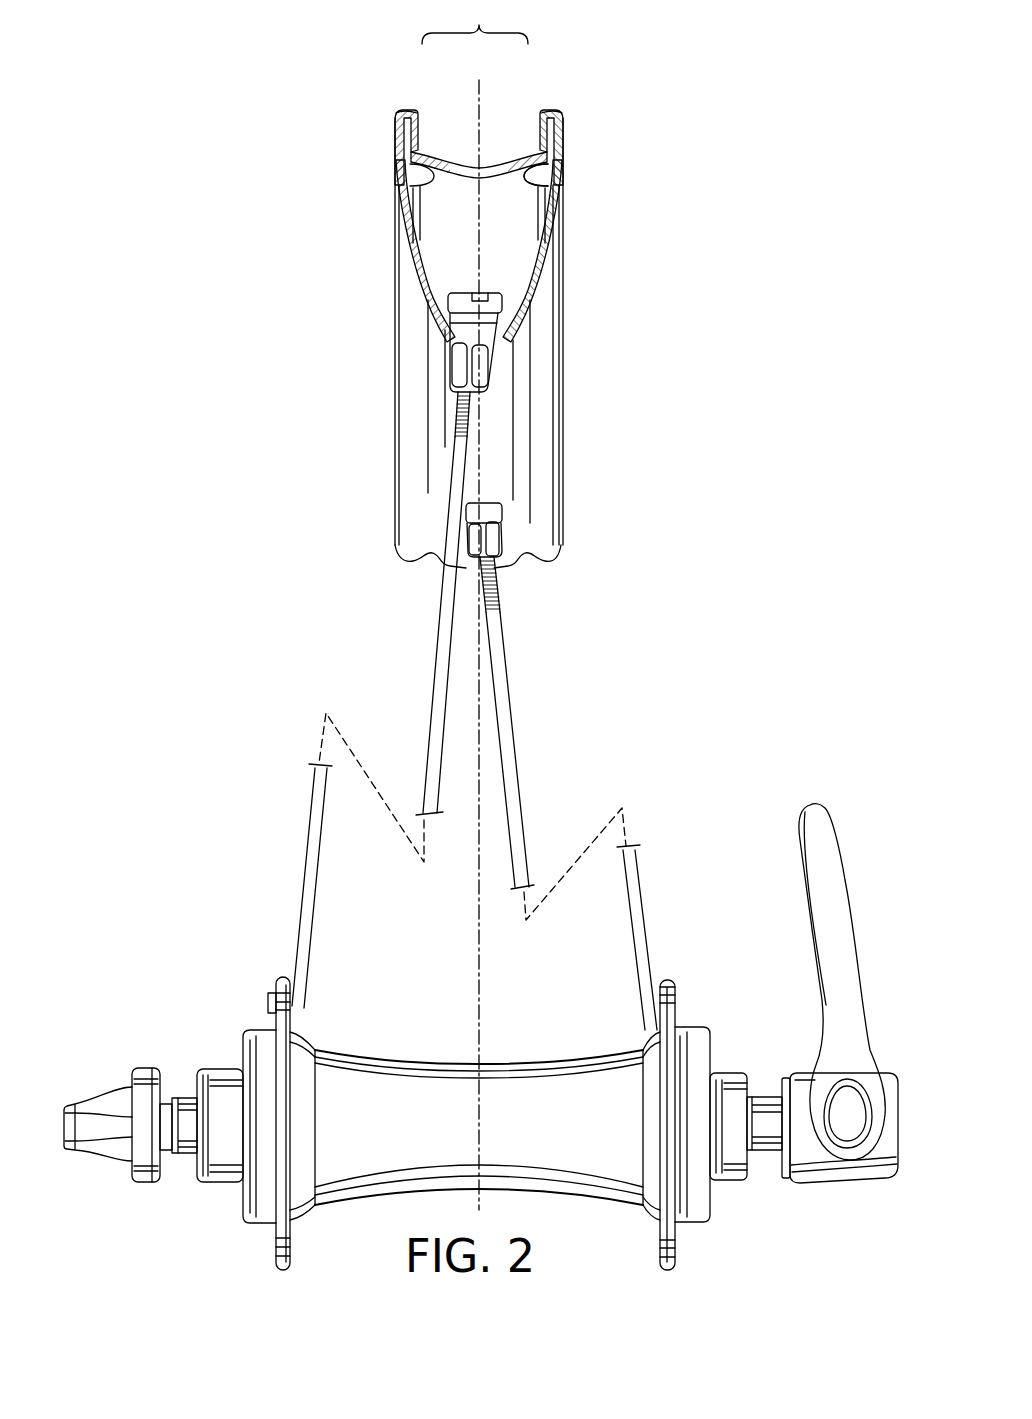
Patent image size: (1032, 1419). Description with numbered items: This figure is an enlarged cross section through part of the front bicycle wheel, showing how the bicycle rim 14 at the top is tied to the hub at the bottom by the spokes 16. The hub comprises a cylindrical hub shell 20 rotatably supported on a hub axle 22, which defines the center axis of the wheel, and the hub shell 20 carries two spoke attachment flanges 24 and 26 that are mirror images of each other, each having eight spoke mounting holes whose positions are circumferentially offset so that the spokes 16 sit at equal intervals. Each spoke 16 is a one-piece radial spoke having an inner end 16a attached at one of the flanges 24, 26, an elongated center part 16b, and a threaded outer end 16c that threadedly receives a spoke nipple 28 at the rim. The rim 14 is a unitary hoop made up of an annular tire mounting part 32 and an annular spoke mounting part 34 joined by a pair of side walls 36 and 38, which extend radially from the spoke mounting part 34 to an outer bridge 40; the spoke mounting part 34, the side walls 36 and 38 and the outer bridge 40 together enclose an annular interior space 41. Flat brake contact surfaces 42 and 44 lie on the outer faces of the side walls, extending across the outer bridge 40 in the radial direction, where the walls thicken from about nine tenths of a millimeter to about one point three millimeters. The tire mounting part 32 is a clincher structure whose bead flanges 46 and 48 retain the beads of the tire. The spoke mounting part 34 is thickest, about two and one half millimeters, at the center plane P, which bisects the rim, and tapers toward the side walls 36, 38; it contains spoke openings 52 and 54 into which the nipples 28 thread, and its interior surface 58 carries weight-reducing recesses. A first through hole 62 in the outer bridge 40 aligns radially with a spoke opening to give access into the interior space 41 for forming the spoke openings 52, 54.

The bicycle rim 14 is at (386, 375).
The spokes 16 is at (457, 667).
The inner end 16a is at (300, 995).
The elongated center part 16b is at (427, 725).
The outer end 16c is at (480, 402).
The hub shell 20 is at (442, 1063).
The hub axle 22 is at (762, 1093).
The spoke attachment flange 24 is at (283, 980).
The spoke attachment flange 26 is at (668, 980).
The spoke nipple 28 is at (500, 360).
The annular tire mounting part 32 is at (475, 22).
The annular spoke mounting part 34 is at (521, 336).
The side wall 36 is at (417, 263).
The side wall 38 is at (547, 253).
The outer bridge 40 is at (423, 173).
The annular interior space 41 is at (467, 217).
The brake contact surface 42 is at (395, 155).
The brake contact surface 44 is at (563, 147).
The bead flange 46 is at (413, 103).
The bead flange 48 is at (543, 103).
The spoke opening 52 is at (460, 348).
The spoke opening 54 is at (487, 533).
The interior surface 58 is at (443, 292).
The first through hole 62 is at (512, 173).
The center plane P is at (473, 962).